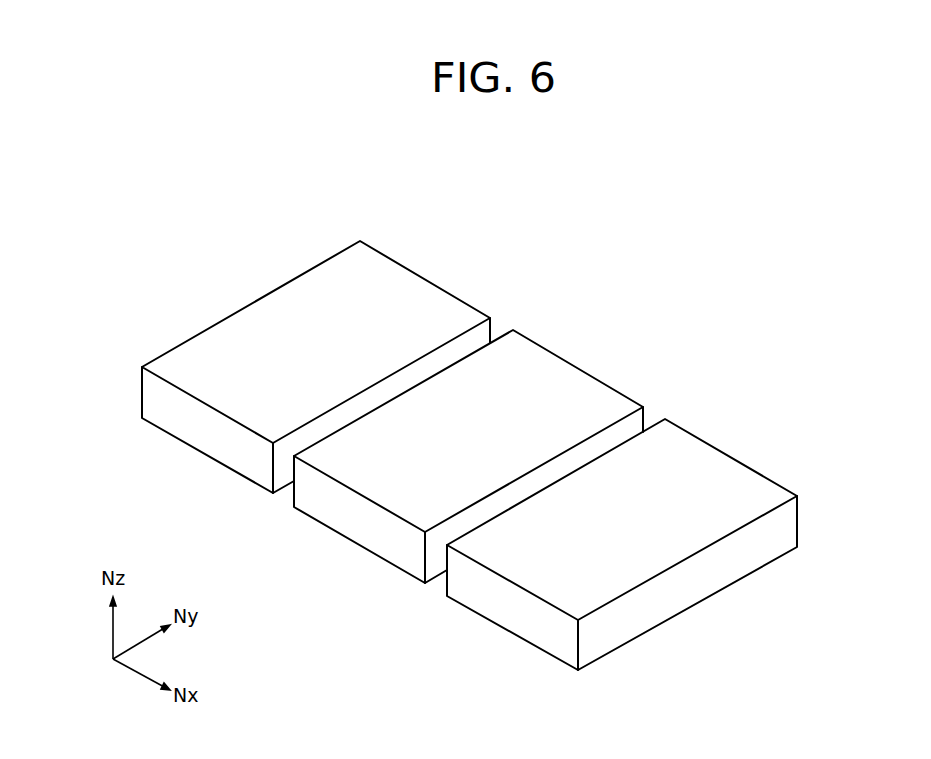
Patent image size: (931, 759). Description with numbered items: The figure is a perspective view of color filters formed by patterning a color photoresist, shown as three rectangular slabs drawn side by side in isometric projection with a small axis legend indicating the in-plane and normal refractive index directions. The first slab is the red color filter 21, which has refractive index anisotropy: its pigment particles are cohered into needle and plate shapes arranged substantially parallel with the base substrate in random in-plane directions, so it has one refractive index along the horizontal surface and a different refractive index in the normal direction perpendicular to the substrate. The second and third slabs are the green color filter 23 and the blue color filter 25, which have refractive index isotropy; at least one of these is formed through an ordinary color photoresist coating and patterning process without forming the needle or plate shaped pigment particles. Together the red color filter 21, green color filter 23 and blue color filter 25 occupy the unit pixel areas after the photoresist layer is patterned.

The red color filter 21 is at (412, 282).
The green color filter 23 is at (564, 370).
The blue color filter 25 is at (725, 464).